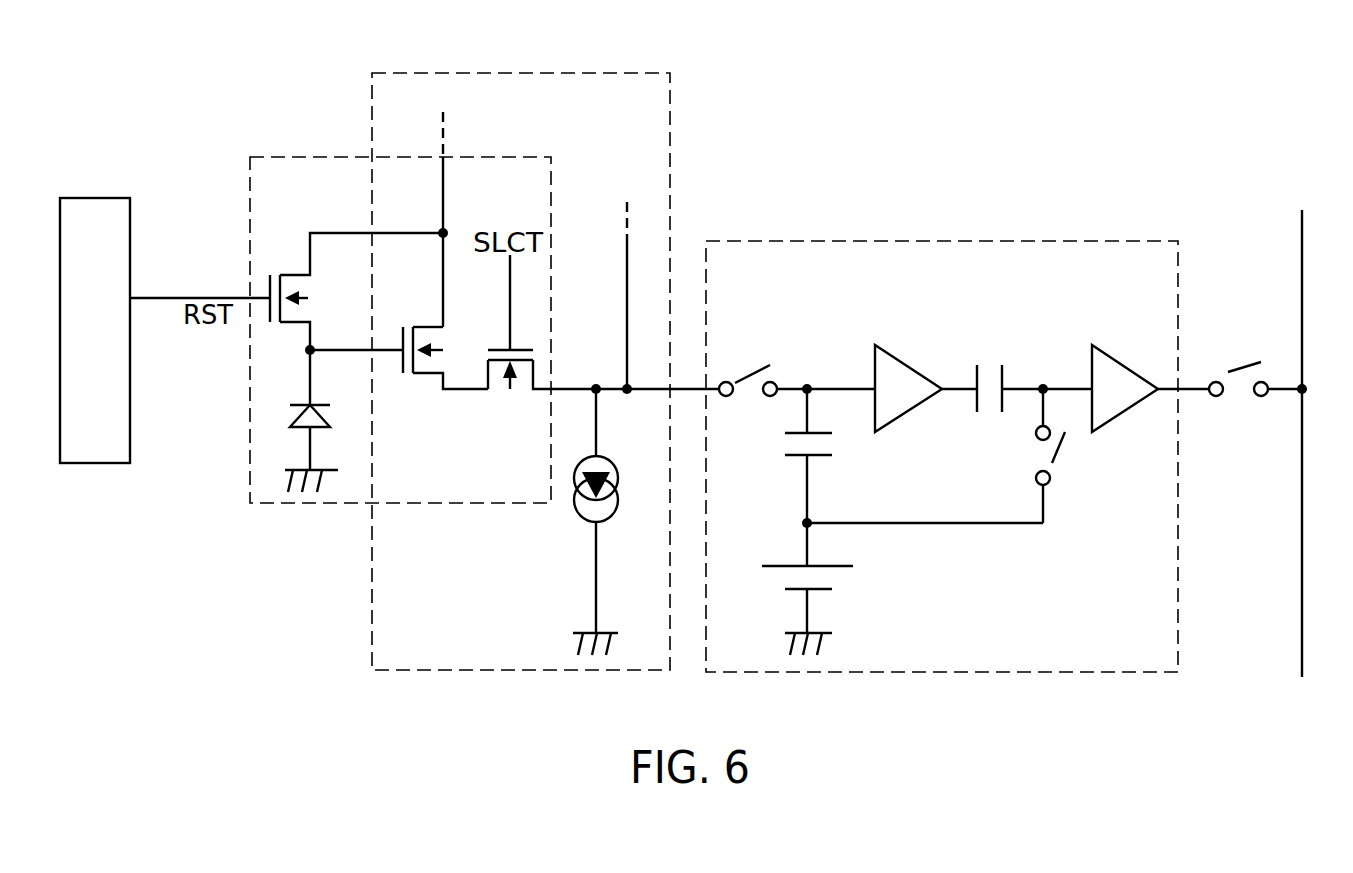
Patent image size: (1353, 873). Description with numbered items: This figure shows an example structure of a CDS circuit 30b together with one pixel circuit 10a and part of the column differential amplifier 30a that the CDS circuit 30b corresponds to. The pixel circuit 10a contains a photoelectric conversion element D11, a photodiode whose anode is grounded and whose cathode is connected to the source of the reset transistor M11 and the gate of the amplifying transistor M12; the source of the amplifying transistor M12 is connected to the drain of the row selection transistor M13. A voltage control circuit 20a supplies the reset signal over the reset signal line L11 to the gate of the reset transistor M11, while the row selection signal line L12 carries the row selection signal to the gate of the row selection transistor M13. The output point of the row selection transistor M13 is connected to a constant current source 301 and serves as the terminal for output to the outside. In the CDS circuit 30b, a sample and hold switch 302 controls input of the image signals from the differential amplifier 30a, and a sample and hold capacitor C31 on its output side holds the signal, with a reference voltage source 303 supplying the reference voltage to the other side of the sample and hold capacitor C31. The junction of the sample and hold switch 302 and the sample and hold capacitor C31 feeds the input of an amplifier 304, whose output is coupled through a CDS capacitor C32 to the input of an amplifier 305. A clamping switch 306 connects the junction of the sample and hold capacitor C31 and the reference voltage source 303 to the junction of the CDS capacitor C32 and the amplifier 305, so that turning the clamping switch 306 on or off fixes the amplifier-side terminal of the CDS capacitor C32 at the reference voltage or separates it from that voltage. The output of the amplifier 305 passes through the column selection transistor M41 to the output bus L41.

The voltage control circuit 20a is at (106, 198).
The pixel circuit 10a is at (288, 157).
The differential amplifier 30a is at (634, 73).
The CDS circuit 30b is at (1117, 241).
The reset signal line L11 is at (176, 298).
The reset transistor M11 is at (292, 325).
The photoelectric conversion element D11 is at (287, 417).
The row selection signal line L12 is at (510, 327).
The amplifying transistor M12 is at (430, 380).
The row selection transistor M13 is at (500, 402).
The constant current source 301 is at (580, 527).
The sample and hold switch 302 is at (750, 363).
The reference voltage source 303 is at (840, 597).
The amplifier 304 is at (900, 358).
The amplifier 305 is at (1117, 353).
The clamping switch 306 is at (1056, 463).
The sample and hold capacitor C31 is at (833, 448).
The CDS capacitor C32 is at (993, 363).
The column selection transistor M41 is at (1238, 363).
The output bus L41 is at (1303, 214).